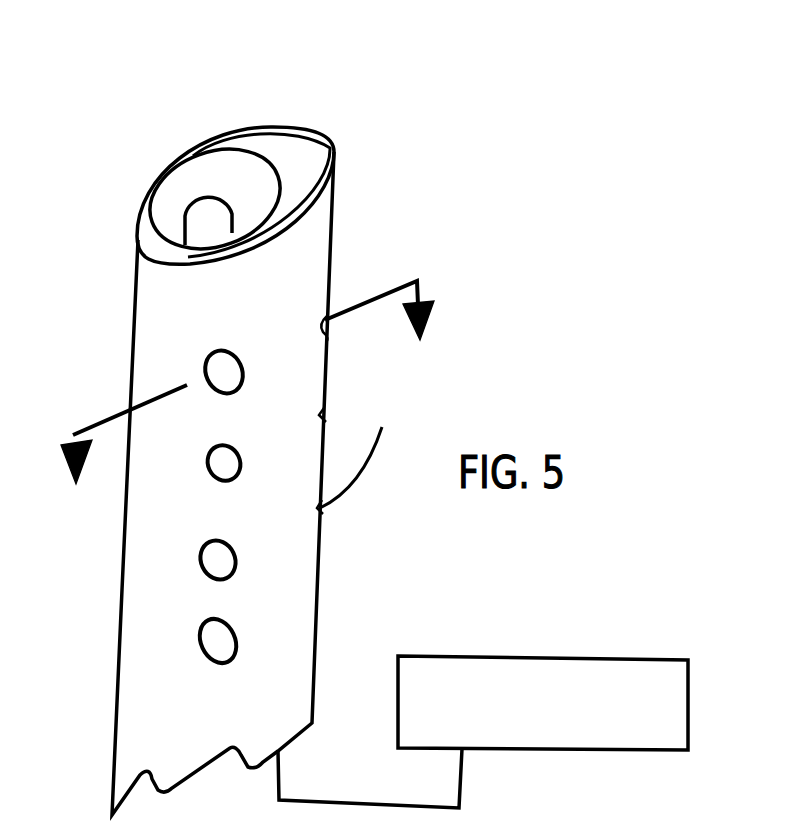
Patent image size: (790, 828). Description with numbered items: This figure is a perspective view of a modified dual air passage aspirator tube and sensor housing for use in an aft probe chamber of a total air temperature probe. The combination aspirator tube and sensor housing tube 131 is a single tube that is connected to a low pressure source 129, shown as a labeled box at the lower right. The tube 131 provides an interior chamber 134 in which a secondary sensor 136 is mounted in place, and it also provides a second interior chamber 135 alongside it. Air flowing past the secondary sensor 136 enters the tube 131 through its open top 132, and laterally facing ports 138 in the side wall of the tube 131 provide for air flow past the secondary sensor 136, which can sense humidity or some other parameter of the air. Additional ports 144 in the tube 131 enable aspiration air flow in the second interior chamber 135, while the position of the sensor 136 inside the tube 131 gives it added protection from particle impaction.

The pressure source 129 is at (443, 657).
The combination aspirator tube and sensor housing tube 131 is at (278, 265).
The open top 132 is at (268, 98).
The interior chamber 134 is at (197, 176).
The second interior chamber 135 is at (331, 131).
The secondary sensor 136 is at (213, 223).
The laterally facing ports 138 is at (197, 383).
The additional ports 144 is at (324, 415).